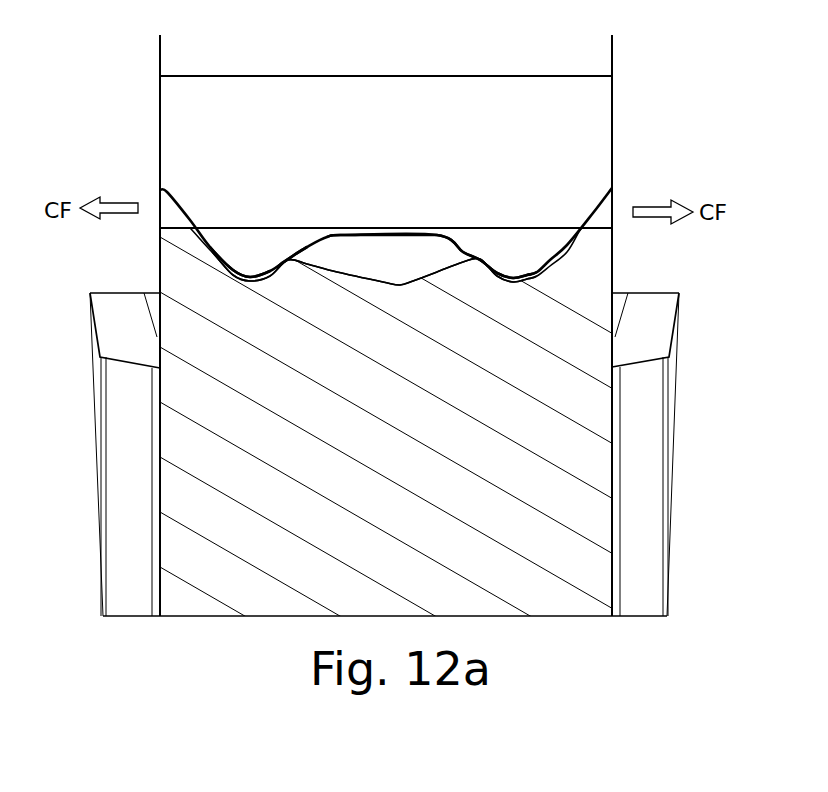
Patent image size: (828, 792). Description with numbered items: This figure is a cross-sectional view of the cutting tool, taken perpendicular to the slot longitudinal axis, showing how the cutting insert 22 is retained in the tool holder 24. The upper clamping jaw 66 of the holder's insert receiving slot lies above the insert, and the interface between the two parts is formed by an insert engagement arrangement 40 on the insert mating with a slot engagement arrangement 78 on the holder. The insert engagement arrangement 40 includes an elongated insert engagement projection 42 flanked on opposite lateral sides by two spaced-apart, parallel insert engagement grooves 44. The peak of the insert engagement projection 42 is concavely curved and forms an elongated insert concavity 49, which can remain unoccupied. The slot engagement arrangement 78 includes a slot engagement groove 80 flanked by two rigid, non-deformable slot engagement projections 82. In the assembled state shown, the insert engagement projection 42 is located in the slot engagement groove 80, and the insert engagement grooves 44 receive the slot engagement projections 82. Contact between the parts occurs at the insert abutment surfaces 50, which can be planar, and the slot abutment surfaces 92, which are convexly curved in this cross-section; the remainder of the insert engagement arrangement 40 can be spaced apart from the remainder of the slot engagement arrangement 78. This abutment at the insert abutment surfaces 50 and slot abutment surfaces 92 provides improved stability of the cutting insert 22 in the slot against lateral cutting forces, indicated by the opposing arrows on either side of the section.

The cutting insert 22 is at (583, 295).
The tool holder 24 is at (120, 93).
The insert engagement arrangement 40 is at (394, 260).
The insert engagement projection 42 is at (432, 259).
The insert engagement grooves 44 is at (238, 250).
The insert concavity 49 is at (379, 262).
The insert abutment surface 50 is at (287, 257).
The upper clamping jaw 66 is at (585, 132).
The slot engagement arrangement 78 is at (402, 264).
The slot engagement groove 80 is at (330, 254).
The slot engagement projections 82 is at (246, 292).
The slot abutment surface 92 is at (289, 270).